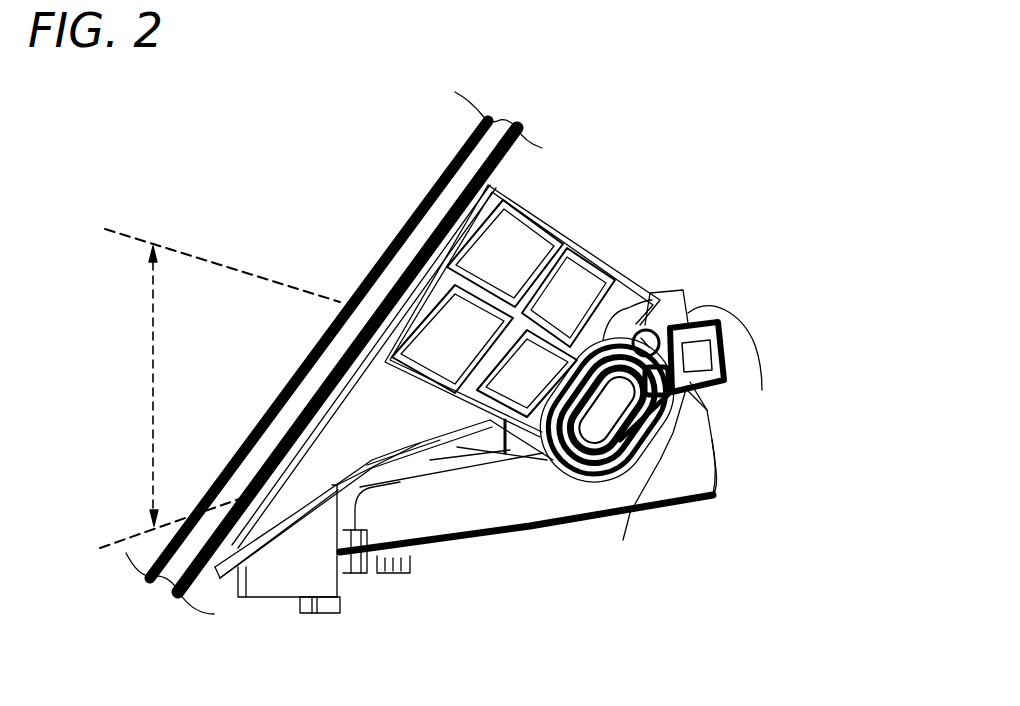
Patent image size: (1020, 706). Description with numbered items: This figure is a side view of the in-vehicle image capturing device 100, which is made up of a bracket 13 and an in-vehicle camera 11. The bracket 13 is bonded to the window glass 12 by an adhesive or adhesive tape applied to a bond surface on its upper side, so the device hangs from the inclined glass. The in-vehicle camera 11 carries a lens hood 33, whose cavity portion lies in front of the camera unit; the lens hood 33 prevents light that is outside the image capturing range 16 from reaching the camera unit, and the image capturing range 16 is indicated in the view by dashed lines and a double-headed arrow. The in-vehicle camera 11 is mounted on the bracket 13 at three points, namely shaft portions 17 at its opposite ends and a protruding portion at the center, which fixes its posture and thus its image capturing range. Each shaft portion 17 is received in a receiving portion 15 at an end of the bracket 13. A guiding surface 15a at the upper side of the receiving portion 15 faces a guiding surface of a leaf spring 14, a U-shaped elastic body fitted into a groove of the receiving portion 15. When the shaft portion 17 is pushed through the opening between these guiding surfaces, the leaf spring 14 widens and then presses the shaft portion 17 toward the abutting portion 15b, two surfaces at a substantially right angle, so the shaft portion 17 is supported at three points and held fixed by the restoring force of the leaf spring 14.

The window glass 12 is at (480, 167).
The bracket 13 is at (567, 237).
The in-vehicle image capturing device 100 is at (651, 242).
The leaf spring 14 is at (727, 317).
The receiving portion 15 is at (762, 395).
The guiding surface 15a is at (722, 388).
The abutting portion 15b is at (623, 540).
The shaft portion 17 is at (550, 467).
The in-vehicle camera 11 is at (588, 497).
The lens hood 33 is at (384, 516).
The image capturing range 16 is at (137, 380).